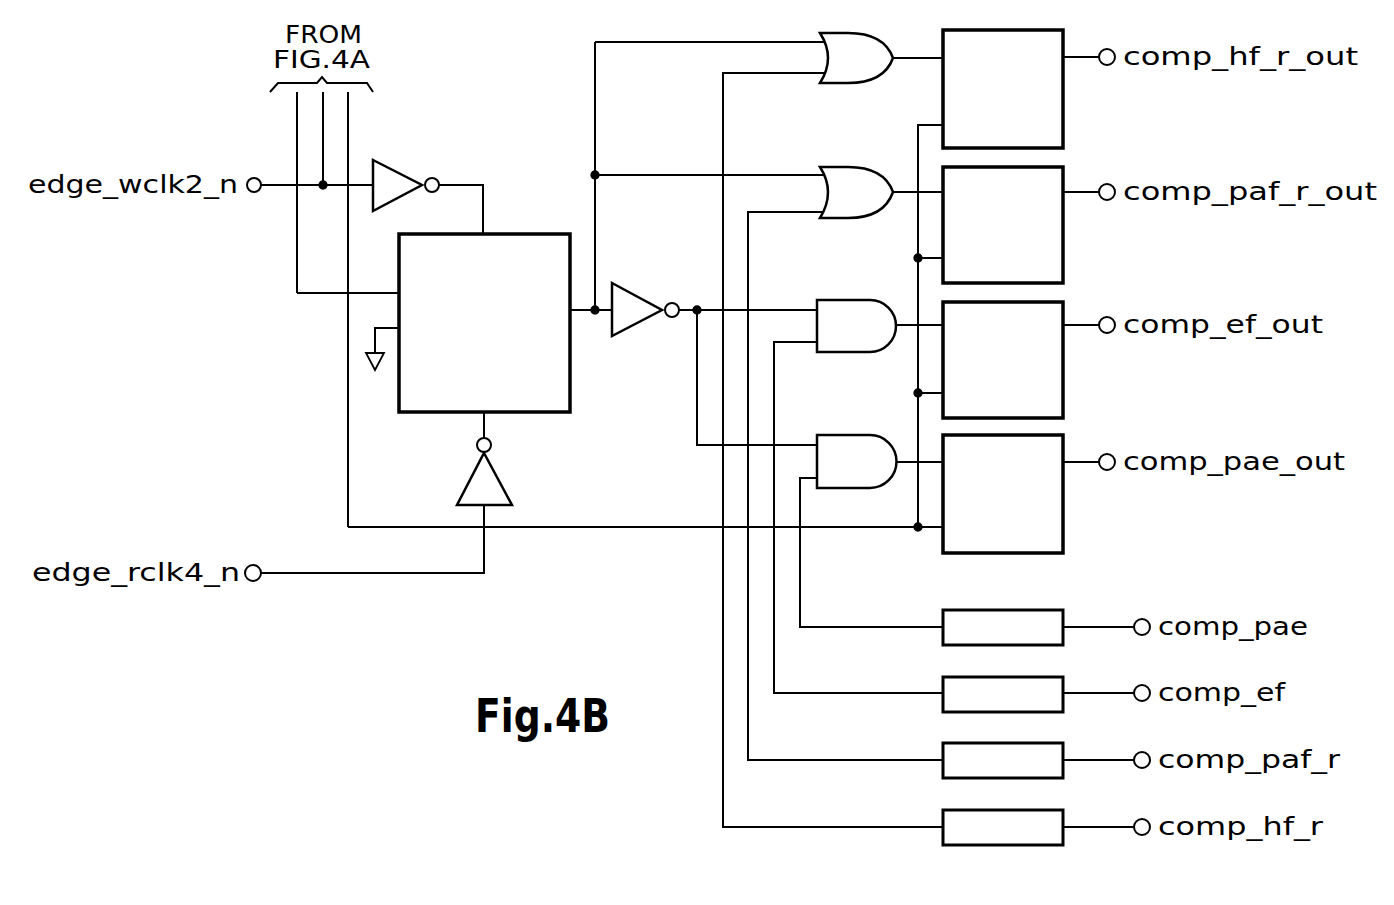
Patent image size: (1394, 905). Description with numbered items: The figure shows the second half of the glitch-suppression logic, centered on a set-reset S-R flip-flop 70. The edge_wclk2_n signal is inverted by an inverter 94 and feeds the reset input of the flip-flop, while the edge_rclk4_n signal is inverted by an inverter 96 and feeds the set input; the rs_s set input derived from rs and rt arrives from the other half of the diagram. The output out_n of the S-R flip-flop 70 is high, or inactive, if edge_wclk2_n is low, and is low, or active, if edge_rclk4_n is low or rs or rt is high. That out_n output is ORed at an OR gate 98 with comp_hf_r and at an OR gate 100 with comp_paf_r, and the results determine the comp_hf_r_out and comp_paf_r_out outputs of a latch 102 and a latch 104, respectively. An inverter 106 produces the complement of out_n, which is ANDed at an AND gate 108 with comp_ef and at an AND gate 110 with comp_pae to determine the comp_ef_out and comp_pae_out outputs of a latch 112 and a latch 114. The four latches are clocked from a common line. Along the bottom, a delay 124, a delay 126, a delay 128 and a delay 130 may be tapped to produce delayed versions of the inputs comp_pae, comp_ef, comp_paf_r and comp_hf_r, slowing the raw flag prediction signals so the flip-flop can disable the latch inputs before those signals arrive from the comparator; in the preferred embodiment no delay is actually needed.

The S-R flip-flop 70 is at (534, 233).
The inverter 94 is at (404, 173).
The inverter 96 is at (506, 485).
The OR gate 98 is at (857, 88).
The OR gate 100 is at (868, 221).
The latch 102 is at (1065, 126).
The latch 104 is at (1065, 261).
The inverter 106 is at (641, 289).
The AND gate 108 is at (870, 356).
The AND gate 110 is at (833, 433).
The latch 112 is at (1065, 396).
The latch 114 is at (1065, 523).
The delay 124 is at (962, 610).
The delay 126 is at (962, 677).
The delay 128 is at (962, 743).
The delay 130 is at (962, 810).